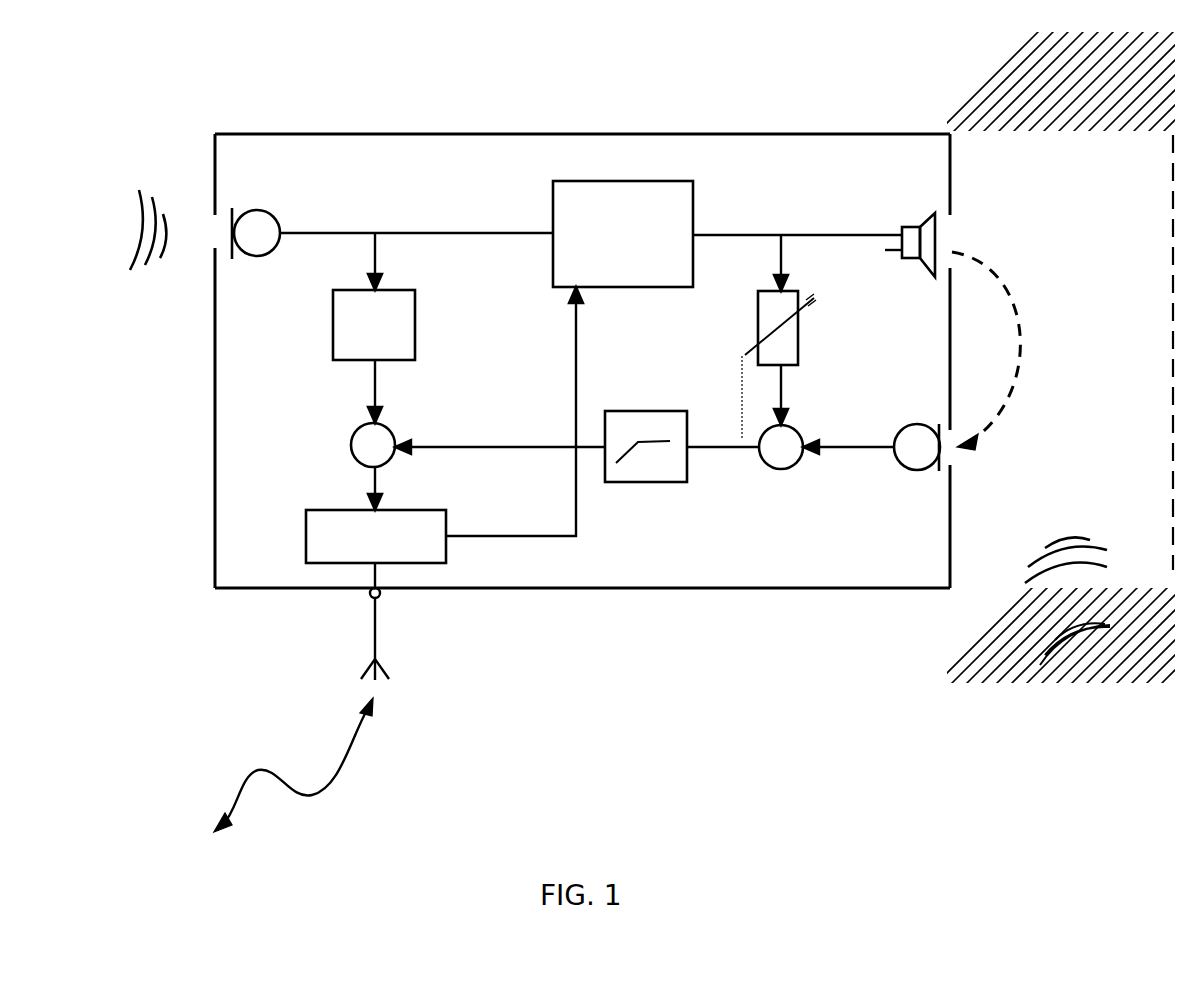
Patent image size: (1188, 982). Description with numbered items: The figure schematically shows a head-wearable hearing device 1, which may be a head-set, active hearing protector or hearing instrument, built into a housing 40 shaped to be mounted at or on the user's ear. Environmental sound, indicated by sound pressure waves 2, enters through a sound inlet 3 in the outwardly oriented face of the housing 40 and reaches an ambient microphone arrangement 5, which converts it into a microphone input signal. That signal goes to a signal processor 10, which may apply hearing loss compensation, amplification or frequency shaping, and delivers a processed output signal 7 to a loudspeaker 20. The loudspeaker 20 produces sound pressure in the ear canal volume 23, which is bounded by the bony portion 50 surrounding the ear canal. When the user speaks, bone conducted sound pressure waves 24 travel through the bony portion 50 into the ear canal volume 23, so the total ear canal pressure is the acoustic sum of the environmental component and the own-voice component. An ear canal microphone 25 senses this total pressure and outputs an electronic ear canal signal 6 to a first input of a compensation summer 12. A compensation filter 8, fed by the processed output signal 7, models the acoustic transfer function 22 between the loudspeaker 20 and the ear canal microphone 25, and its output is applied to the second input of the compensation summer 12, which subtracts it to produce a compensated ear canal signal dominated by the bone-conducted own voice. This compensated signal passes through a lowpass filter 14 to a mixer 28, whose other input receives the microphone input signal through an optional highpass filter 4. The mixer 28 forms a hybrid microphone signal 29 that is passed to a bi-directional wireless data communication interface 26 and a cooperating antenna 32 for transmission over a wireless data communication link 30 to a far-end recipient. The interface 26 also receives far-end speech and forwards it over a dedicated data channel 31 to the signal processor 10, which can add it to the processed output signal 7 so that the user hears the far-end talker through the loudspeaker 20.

The head-wearable hearing device 1 is at (165, 699).
The sound pressure waves 2 is at (125, 252).
The sound inlet 3 is at (183, 190).
The highpass filter 4 is at (348, 325).
The ambient microphone arrangement 5 is at (254, 214).
The electronic ear canal signal 6 is at (867, 419).
The processed output signal 7 is at (747, 208).
The compensation filter 8 is at (763, 372).
The signal processor 10 is at (594, 250).
The compensation summer 12 is at (763, 457).
The lowpass filter 14 is at (641, 462).
The loudspeaker 20 is at (887, 254).
The acoustic transfer function 22 is at (1001, 338).
The ear canal volume 23 is at (1090, 336).
The bone conducted sound pressure waves 24 is at (1041, 540).
The ear canal microphone 25 is at (896, 464).
The bi-directional wireless data communication interface 26 is at (706, 361).
The mixer 28 is at (346, 440).
The hybrid microphone signal 29 is at (334, 472).
The wireless data communication link 30 is at (293, 765).
The data channel 31 is at (514, 411).
The antenna 32 is at (338, 634).
The housing 40 is at (582, 388).
The bony portion 50 is at (1035, 362).